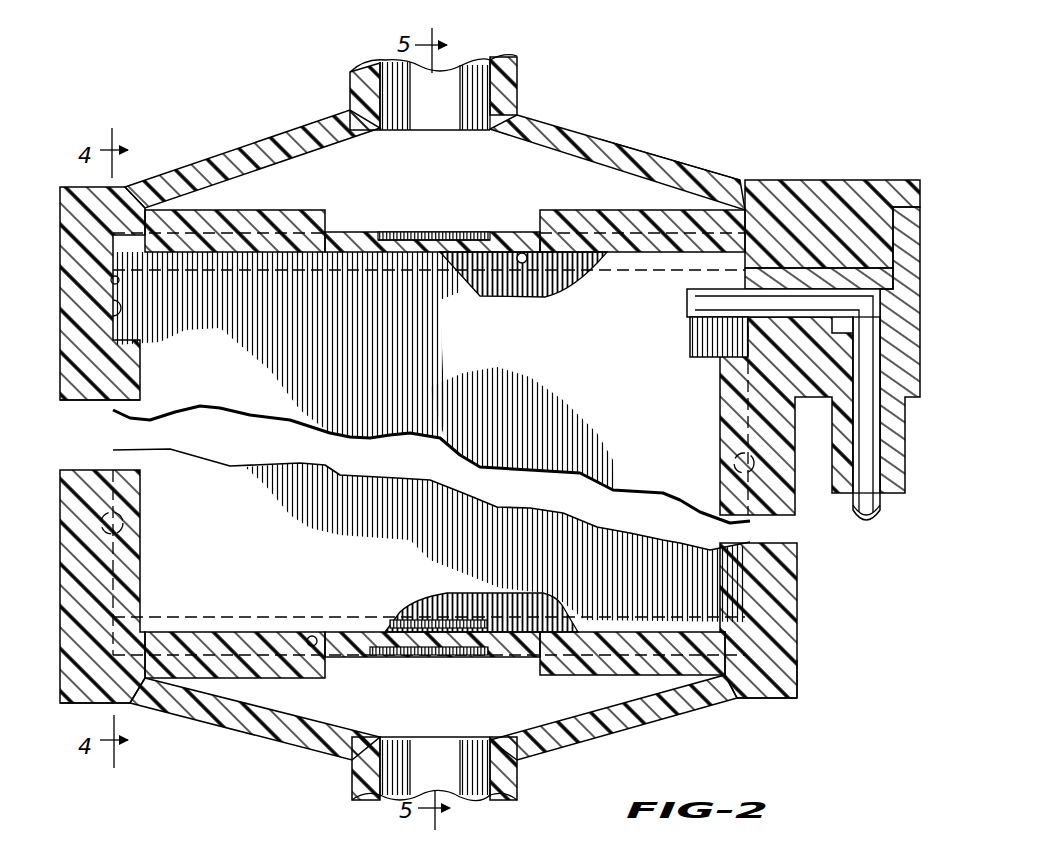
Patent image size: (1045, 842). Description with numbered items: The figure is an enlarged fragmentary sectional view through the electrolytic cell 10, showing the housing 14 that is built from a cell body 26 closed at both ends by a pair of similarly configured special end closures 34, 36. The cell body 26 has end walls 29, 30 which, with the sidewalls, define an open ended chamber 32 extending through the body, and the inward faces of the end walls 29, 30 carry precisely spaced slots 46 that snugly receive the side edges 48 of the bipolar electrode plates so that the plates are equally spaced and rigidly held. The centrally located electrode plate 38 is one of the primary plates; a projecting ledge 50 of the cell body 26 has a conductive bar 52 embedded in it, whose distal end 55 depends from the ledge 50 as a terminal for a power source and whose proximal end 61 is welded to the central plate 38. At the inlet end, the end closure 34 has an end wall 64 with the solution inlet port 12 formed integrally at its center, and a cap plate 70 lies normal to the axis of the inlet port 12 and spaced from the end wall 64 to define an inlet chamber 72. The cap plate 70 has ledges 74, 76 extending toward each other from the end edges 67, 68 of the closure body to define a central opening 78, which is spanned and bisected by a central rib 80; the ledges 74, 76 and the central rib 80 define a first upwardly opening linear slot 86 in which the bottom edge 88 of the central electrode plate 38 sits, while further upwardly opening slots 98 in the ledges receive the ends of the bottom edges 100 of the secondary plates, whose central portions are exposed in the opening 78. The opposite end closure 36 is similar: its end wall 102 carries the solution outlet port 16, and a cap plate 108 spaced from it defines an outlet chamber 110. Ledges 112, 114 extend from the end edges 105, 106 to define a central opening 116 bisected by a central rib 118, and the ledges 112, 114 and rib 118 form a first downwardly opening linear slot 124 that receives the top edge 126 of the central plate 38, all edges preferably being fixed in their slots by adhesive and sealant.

The electrolytic cell 10 is at (712, 158).
The solution inlet port 12 is at (415, 752).
The housing 14 is at (810, 660).
The solution outlet port 16 is at (388, 82).
The cell body 26 is at (803, 500).
The end wall 29 is at (61, 400).
The end wall 30 is at (802, 614).
The open ended chamber 32 is at (142, 503).
The end closure 34 is at (285, 754).
The end closure 36 is at (276, 124).
The centrally located electrode plate 38 is at (446, 422).
The slots 46 is at (113, 306).
The side edges 48 is at (118, 282).
The projecting ledge 50 is at (897, 256).
The conductive bar 52 is at (850, 357).
The distal end 55 is at (886, 505).
The proximal end 61 is at (687, 298).
The end wall 64 is at (598, 733).
The end edge 67 is at (60, 702).
The end edge 68 is at (800, 682).
The cap plate 70 is at (289, 627).
The inlet chamber 72 is at (452, 705).
The ledge 74 is at (229, 632).
The ledge 76 is at (625, 660).
The central opening 78 is at (444, 668).
The central rib 80 is at (360, 631).
The first upwardly opening linear slot 86 is at (430, 625).
The bottom edge 88 is at (312, 632).
The upwardly opening slots 98 is at (172, 640).
The bottom edges 100 is at (376, 658).
The end wall 102 is at (625, 163).
The end edge 105 is at (60, 187).
The end edge 106 is at (920, 184).
The cap plate 108 is at (307, 194).
The outlet chamber 110 is at (414, 165).
The ledge 112 is at (262, 211).
The ledge 114 is at (581, 212).
The central opening 116 is at (445, 252).
The central rib 118 is at (400, 232).
The first downwardly opening linear slot 124 is at (521, 253).
The top edge 126 is at (365, 231).